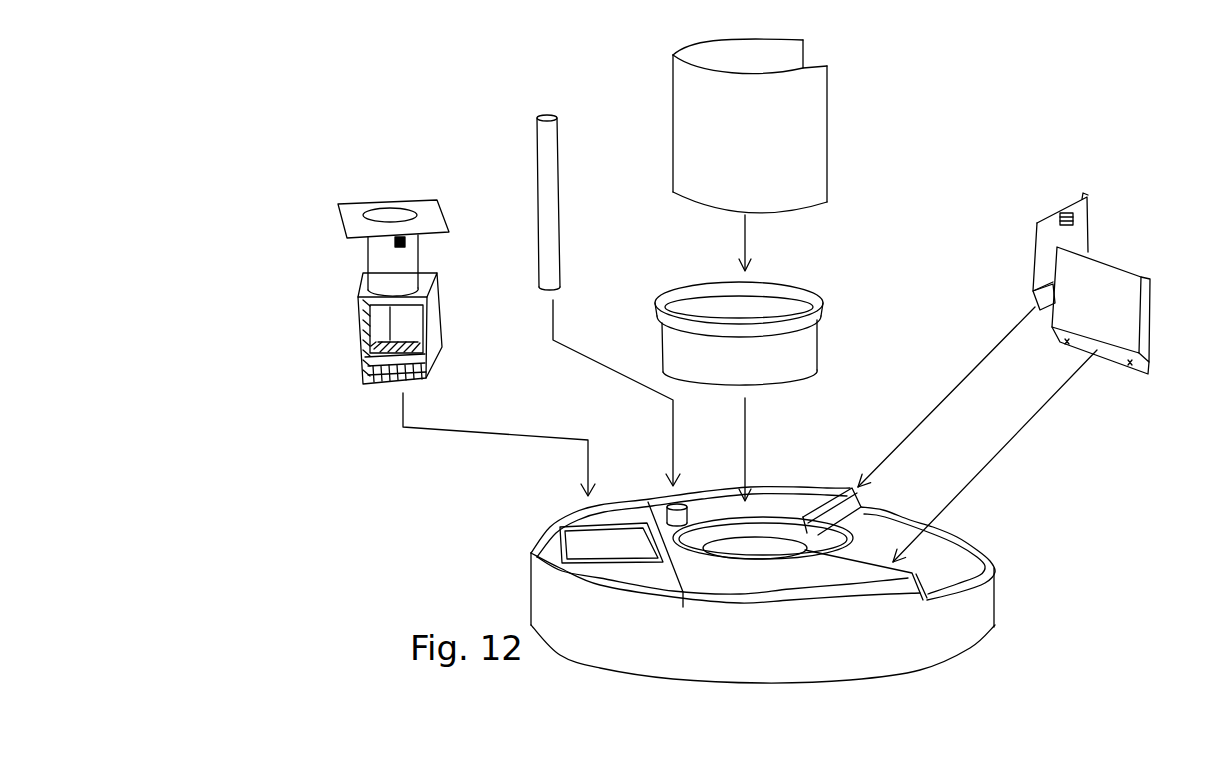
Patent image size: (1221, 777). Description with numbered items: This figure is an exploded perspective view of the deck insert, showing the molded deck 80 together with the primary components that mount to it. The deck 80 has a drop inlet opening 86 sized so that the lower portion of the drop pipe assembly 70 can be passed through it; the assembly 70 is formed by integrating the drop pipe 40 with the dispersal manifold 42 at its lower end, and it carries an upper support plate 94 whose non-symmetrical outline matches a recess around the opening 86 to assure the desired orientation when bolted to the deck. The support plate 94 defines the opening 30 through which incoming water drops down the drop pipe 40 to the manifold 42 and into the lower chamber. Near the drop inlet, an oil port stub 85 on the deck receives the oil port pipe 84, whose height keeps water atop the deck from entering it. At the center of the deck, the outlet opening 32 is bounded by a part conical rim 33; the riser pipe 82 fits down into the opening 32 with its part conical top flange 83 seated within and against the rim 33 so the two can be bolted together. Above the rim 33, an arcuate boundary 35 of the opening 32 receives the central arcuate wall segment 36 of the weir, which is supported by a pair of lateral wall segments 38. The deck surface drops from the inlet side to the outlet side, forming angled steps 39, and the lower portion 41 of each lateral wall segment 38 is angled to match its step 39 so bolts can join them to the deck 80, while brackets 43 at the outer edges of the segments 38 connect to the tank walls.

The opening 30 is at (390, 212).
The opening 32 is at (760, 557).
The part conical rim 33 is at (803, 545).
The arcuate boundary 35 is at (770, 527).
The central arcuate wall segment 36 is at (678, 95).
The lateral wall segments 38 is at (1084, 284).
The angled steps 39 is at (848, 505).
The drop pipe 40 is at (415, 263).
The lower portion 41 is at (1040, 305).
The dispersal manifold 42 is at (350, 368).
The brackets 43 is at (1083, 200).
The drop pipe assembly 70 is at (379, 256).
The molded deck 80 is at (995, 572).
The riser pipe 82 is at (772, 323).
The part conical top flange 83 is at (823, 298).
The oil port pipe 84 is at (540, 152).
The oil port stub 85 is at (692, 504).
The drop inlet opening 86 is at (575, 552).
The upper support plate 94 is at (373, 175).